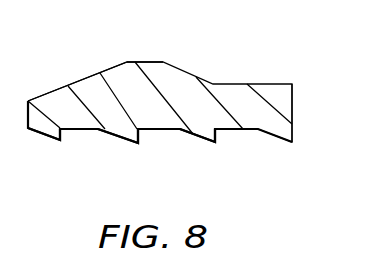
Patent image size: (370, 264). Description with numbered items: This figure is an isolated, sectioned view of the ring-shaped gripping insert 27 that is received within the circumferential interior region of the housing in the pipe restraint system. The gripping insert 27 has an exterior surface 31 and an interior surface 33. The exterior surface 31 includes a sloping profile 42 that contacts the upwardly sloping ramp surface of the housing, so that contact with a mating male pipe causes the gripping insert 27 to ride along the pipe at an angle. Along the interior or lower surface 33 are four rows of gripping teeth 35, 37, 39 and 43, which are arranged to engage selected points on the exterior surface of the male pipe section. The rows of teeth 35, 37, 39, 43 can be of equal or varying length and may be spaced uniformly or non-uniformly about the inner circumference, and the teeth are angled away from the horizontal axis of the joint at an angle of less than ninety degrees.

The gripping insert 27 is at (237, 72).
The exterior surface 31 is at (145, 62).
The sloping profile 42 is at (77, 82).
The row of teeth 43 is at (293, 133).
The interior surface 33 is at (93, 131).
The row of teeth 35 is at (62, 139).
The row of teeth 37 is at (140, 141).
The row of teeth 39 is at (216, 141).